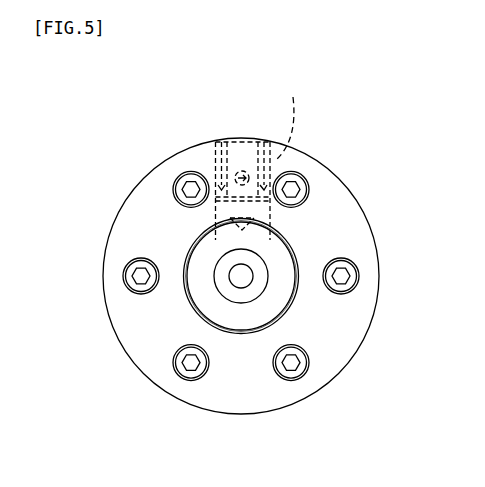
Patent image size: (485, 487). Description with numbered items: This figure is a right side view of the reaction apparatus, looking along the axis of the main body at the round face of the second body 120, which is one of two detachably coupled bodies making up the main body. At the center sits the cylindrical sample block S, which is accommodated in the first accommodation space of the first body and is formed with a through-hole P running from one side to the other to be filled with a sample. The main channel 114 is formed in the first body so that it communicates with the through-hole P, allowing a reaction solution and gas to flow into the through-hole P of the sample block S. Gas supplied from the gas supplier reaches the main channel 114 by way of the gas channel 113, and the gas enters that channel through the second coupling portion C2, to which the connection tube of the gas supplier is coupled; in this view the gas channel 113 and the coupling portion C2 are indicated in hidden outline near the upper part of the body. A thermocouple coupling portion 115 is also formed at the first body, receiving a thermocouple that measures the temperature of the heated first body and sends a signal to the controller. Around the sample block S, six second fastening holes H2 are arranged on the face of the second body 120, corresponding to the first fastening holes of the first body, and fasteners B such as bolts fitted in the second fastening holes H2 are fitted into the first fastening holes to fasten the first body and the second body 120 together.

The gas channel 113 is at (197, 240).
The main channel 114 is at (262, 290).
The thermocouple coupling portion 115 is at (242, 153).
The second body 120 is at (340, 177).
The second fastening holes H2 is at (178, 183).
The fasteners B is at (343, 279).
The through-hole P is at (246, 273).
The sample block S is at (243, 334).
The second coupling portion C2 is at (295, 116).